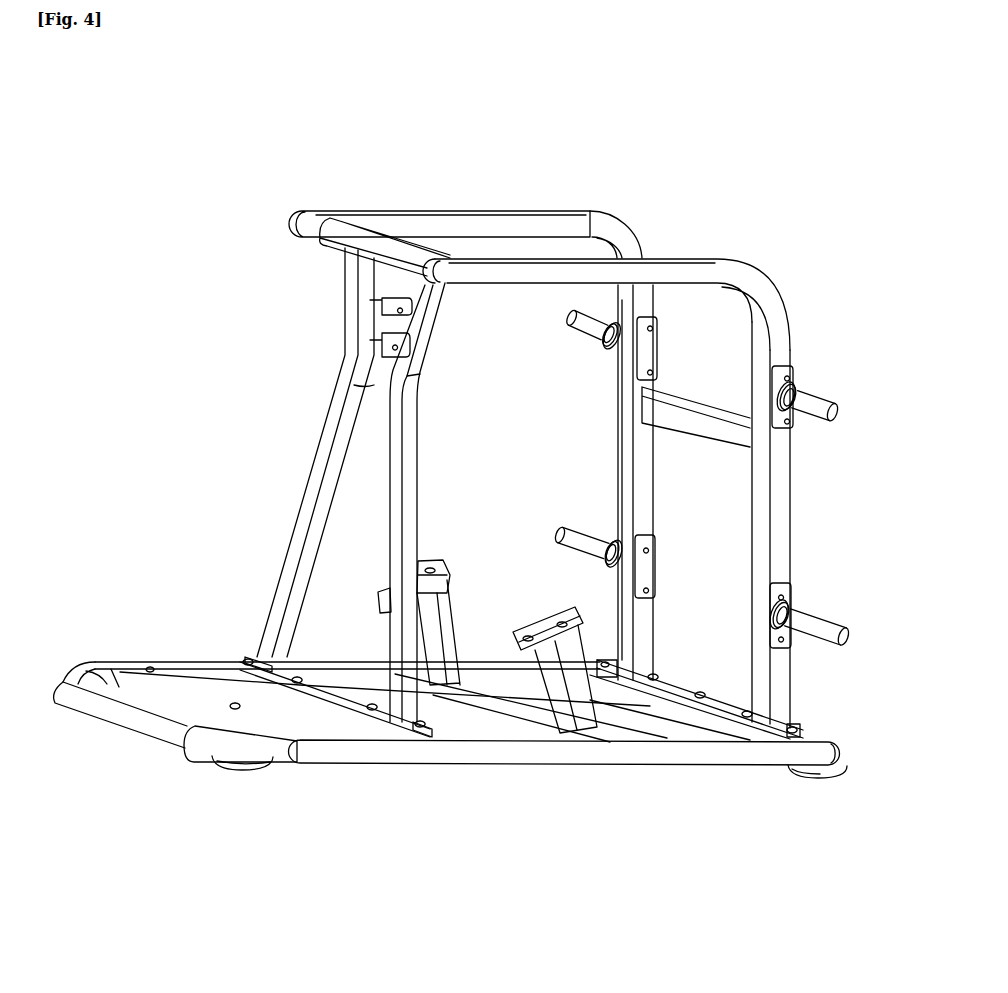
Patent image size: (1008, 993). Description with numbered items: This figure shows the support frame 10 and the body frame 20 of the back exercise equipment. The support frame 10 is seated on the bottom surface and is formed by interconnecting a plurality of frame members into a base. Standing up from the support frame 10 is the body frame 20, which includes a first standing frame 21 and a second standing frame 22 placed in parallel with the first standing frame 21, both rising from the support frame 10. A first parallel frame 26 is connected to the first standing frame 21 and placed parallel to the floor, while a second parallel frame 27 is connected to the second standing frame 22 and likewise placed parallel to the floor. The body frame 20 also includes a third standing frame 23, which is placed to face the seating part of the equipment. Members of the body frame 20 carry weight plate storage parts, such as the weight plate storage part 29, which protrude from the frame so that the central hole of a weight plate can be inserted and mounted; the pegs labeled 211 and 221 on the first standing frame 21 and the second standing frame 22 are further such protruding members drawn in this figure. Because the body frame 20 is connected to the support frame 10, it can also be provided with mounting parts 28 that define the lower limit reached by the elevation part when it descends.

The support frame 10 is at (683, 753).
The body frame 20 is at (334, 184).
The first standing frame 21 is at (780, 492).
The weight holding peg 211 is at (807, 400).
The second standing frame 22 is at (630, 480).
The weight holding peg 221 is at (587, 330).
The third standing frame 23 is at (310, 512).
The first parallel frame 26 is at (670, 277).
The second parallel frame 27 is at (468, 222).
The mounting part 28 is at (437, 637).
The weight plate storage part 29 is at (827, 625).